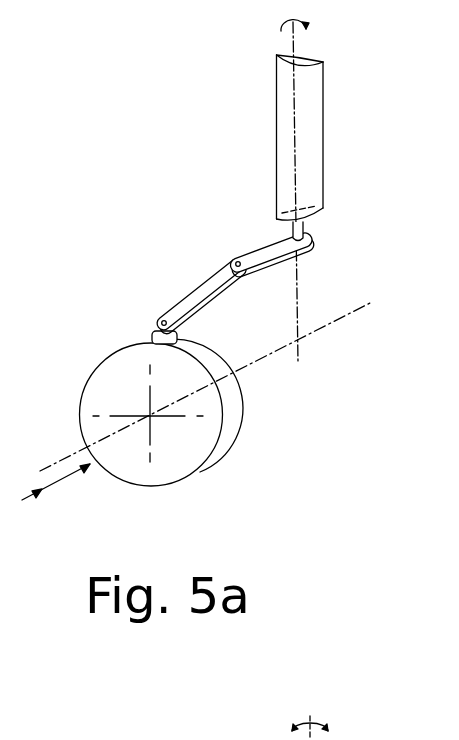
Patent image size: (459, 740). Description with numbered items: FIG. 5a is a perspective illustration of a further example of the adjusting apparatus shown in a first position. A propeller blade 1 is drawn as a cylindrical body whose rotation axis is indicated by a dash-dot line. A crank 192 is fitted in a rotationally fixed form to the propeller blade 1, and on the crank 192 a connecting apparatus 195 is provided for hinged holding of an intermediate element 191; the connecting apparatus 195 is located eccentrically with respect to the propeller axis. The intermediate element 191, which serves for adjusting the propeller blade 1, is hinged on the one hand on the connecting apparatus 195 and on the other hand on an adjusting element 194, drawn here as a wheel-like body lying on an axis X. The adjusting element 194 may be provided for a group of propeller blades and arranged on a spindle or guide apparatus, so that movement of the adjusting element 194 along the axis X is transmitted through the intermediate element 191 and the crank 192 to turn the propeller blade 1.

The propeller blade 1 is at (315, 116).
The intermediate element 191 is at (195, 296).
The crank 192 is at (266, 247).
The adjusting element 194 is at (235, 404).
The connecting apparatus 195 is at (235, 255).
The axis X is at (345, 316).